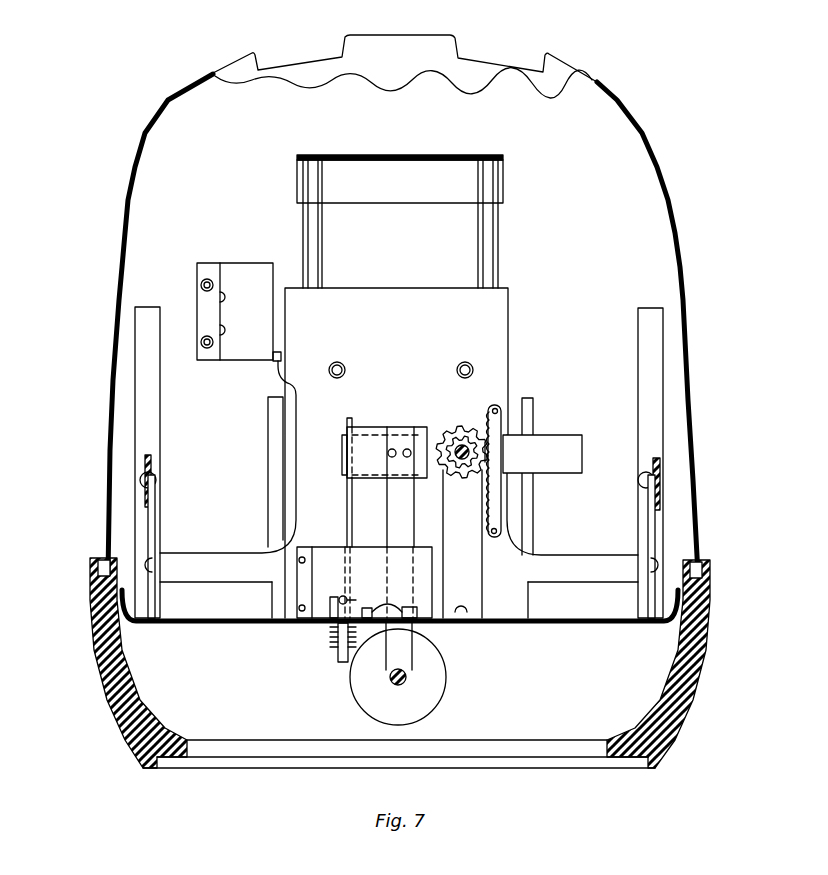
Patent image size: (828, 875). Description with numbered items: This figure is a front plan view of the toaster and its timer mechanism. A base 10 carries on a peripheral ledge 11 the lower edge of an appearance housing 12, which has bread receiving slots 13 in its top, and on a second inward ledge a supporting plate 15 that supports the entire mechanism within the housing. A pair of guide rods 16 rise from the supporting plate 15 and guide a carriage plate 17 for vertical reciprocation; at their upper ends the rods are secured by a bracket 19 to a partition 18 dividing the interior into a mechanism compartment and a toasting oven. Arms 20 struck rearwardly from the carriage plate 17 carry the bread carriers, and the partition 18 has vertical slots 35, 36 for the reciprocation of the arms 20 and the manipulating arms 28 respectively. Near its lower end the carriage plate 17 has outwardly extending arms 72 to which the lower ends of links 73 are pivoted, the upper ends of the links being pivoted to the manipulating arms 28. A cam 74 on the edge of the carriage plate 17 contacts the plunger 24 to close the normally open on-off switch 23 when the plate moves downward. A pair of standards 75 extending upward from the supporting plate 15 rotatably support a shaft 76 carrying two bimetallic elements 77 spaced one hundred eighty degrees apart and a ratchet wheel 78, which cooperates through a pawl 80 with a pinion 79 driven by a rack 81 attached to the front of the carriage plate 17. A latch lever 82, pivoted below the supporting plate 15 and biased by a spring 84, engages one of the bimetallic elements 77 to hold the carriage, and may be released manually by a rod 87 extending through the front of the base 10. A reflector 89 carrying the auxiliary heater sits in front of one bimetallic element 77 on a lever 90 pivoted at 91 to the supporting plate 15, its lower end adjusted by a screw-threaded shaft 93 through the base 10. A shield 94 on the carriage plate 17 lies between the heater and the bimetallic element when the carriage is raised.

The base 10 is at (100, 665).
The peripheral ledge 11 is at (90, 585).
The appearance housing 12 is at (108, 410).
The bread receiving slots 13 is at (266, 62).
The supporting plate 15 is at (190, 624).
The guide rods 16 is at (303, 222).
The carriage plate 17 is at (377, 357).
The partition 18 is at (196, 192).
The bracket 19 is at (386, 194).
The arms 20 is at (272, 596).
The on-off switch 23 is at (229, 324).
The plunger 24 is at (275, 362).
The manipulating arms 28 is at (152, 462).
The slot 35 is at (270, 413).
The slot 36 is at (160, 412).
The arms 72 is at (190, 553).
The links 73 is at (155, 516).
The cam 74 is at (278, 372).
The standards 75 is at (482, 575).
The shaft 76 is at (462, 461).
The bimetallic elements 77 is at (342, 440).
The ratchet wheel 78 is at (446, 468).
The pinion 79 is at (446, 432).
The pawl 80 is at (483, 452).
The rack 81 is at (500, 410).
The latch lever 82 is at (347, 517).
The spring 84 is at (338, 640).
The rod 87 is at (340, 596).
The reflector 89 is at (366, 427).
The lever 90 is at (405, 530).
The pivot 91 is at (410, 605).
The shaft 93 is at (392, 680).
The shield 94 is at (368, 552).